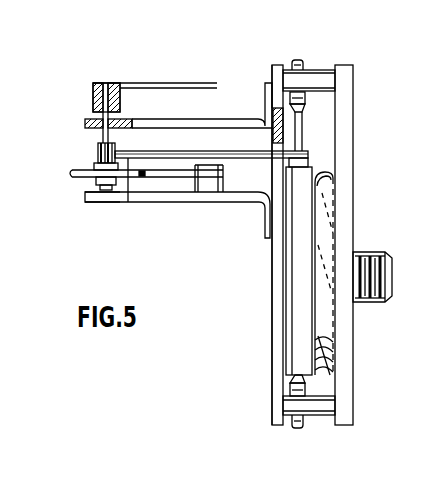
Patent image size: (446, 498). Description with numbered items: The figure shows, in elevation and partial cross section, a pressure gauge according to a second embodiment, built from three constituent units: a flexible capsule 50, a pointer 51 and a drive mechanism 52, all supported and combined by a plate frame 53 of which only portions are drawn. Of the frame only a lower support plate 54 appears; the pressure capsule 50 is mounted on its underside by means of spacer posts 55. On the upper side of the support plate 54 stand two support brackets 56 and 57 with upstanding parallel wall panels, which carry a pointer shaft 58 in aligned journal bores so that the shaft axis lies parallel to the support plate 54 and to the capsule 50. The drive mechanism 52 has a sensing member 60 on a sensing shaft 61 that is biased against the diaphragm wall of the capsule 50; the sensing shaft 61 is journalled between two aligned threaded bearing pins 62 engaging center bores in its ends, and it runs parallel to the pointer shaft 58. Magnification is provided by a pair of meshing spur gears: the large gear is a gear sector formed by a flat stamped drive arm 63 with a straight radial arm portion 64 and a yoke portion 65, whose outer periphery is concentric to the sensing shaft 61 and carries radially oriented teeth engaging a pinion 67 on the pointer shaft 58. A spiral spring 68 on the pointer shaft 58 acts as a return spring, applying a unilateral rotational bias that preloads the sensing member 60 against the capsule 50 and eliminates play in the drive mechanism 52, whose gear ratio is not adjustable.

The flexible capsule 50 is at (364, 163).
The pointer 51 is at (96, 58).
The drive mechanism 52 is at (241, 82).
The plate frame 53 is at (262, 265).
The lower support plate 54 is at (278, 332).
The spacer posts 55 is at (320, 77).
The support bracket 56 is at (96, 201).
The support bracket 57 is at (92, 121).
The pointer shaft 58 is at (103, 136).
The sensing member 60 is at (315, 273).
The sensing shaft 61 is at (297, 308).
The threaded bearing pins 62 is at (299, 58).
The drive arm 63 is at (180, 136).
The radial arm portion 64 is at (192, 154).
The yoke portion 65 is at (128, 202).
The pinion 67 is at (98, 152).
The spiral spring 68 is at (70, 176).